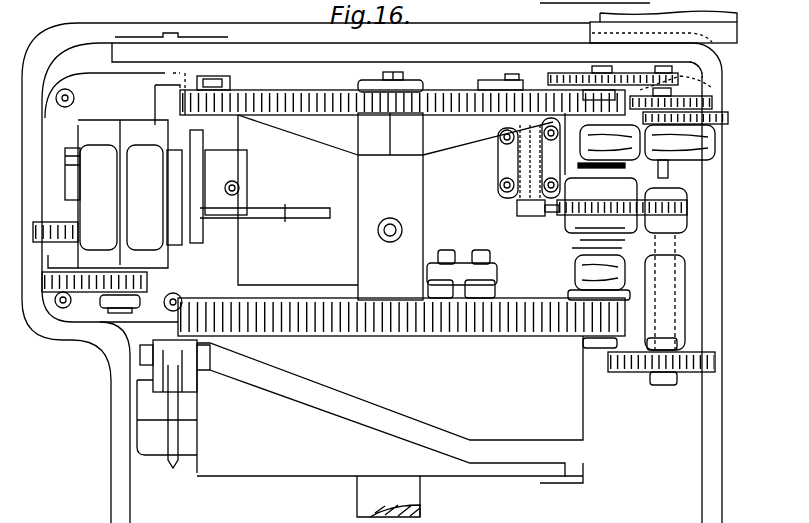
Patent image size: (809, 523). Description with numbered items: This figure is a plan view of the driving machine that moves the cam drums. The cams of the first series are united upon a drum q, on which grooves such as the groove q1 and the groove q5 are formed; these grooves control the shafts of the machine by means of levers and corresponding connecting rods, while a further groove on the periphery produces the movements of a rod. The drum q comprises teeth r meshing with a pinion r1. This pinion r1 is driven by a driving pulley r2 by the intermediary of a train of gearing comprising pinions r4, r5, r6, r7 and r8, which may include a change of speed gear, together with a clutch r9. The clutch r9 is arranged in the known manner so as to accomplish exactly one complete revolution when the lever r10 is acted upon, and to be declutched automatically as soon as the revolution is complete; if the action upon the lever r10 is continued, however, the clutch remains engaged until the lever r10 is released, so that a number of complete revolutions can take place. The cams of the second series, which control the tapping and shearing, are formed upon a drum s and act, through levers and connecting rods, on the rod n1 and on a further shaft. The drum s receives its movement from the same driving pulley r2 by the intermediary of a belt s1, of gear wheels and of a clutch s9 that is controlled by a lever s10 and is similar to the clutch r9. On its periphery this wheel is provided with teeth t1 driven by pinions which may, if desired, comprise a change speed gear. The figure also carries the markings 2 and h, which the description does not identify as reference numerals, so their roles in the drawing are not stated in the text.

The drum s is at (65, 190).
The belt s1 is at (402, 91).
The clutch s9 is at (121, 197).
The lever s10 is at (227, 81).
The teeth t1 is at (312, 92).
The rod n1 is at (212, 186).
The drum q is at (390, 406).
The groove q1 is at (265, 224).
The groove q5 is at (390, 473).
The teeth r is at (416, 338).
The pinion r1 is at (661, 347).
The driving pulley r2 is at (728, 34).
The pinion r4 is at (659, 151).
The pinion r5 is at (712, 102).
The pinion r6 is at (712, 85).
The pinion r7 is at (711, 63).
The pinion r8 is at (565, 75).
The clutch r9 is at (609, 214).
The lever r10 is at (478, 85).
The gear wheel 2 is at (636, 136).
The lever h is at (172, 470).